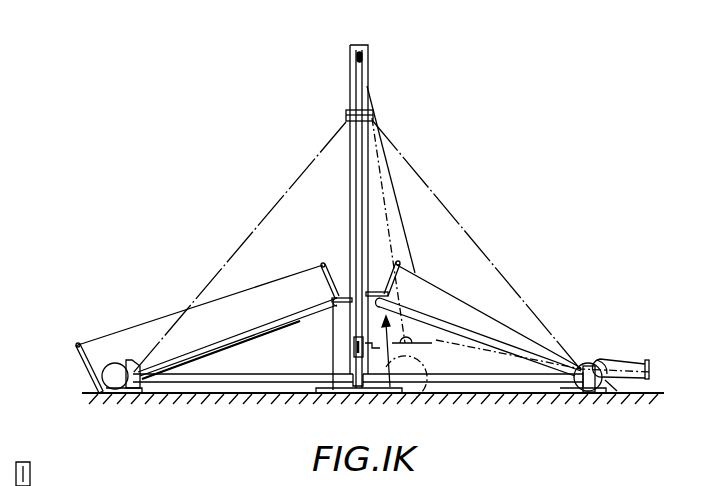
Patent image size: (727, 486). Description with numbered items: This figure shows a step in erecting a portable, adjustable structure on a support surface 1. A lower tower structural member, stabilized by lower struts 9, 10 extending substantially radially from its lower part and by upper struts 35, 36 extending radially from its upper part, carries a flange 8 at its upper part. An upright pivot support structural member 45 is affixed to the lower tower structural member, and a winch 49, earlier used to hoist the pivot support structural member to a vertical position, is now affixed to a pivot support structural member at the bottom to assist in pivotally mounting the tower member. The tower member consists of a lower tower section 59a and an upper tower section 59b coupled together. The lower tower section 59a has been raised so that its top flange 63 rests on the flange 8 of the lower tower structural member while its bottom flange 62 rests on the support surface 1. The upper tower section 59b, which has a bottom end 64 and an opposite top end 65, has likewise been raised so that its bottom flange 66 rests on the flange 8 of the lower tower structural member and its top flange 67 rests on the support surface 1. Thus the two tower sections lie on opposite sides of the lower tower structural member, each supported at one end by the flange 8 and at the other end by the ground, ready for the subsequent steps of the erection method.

The support surface 1 is at (82, 387).
The flange 8 is at (338, 296).
The lower strut 9 is at (195, 384).
The lower strut 10 is at (467, 384).
The upper strut 35 is at (223, 347).
The upper strut 36 is at (433, 327).
The pivot support structural member 45 is at (350, 197).
The winch 49 is at (353, 347).
The lower tower section 59a is at (207, 306).
The upper tower section 59b is at (468, 303).
The bottom flange 62 is at (77, 343).
The top flange 63 is at (322, 265).
The bottom end 64 is at (400, 279).
The top end 65 is at (606, 377).
The bottom flange 66 is at (390, 252).
The top flange 67 is at (618, 361).